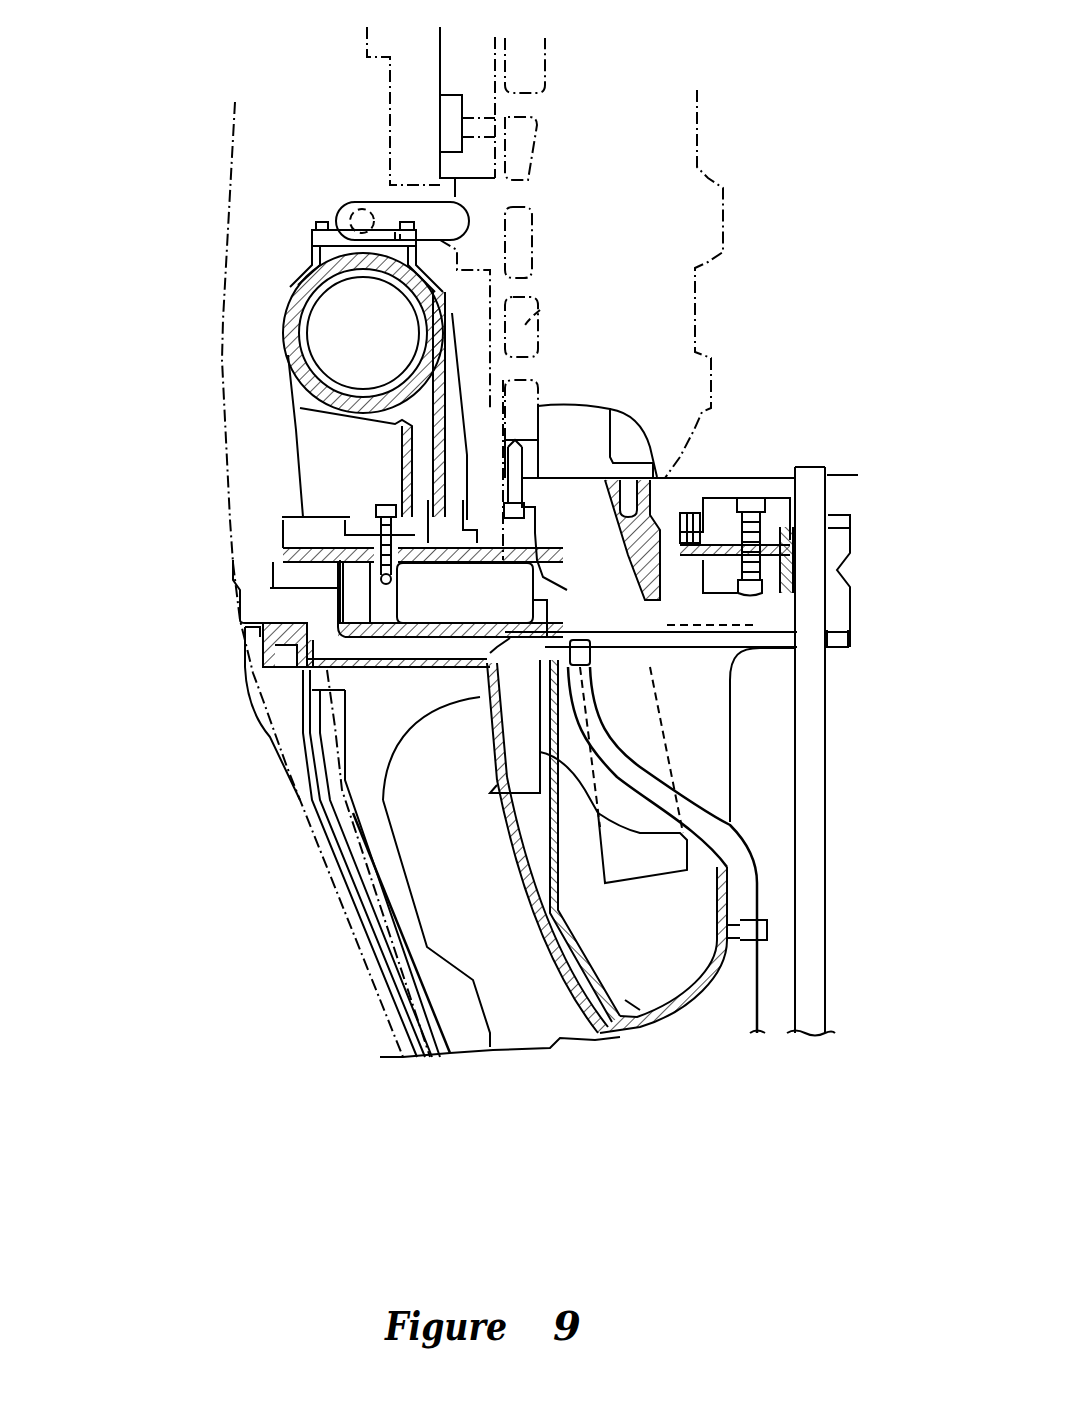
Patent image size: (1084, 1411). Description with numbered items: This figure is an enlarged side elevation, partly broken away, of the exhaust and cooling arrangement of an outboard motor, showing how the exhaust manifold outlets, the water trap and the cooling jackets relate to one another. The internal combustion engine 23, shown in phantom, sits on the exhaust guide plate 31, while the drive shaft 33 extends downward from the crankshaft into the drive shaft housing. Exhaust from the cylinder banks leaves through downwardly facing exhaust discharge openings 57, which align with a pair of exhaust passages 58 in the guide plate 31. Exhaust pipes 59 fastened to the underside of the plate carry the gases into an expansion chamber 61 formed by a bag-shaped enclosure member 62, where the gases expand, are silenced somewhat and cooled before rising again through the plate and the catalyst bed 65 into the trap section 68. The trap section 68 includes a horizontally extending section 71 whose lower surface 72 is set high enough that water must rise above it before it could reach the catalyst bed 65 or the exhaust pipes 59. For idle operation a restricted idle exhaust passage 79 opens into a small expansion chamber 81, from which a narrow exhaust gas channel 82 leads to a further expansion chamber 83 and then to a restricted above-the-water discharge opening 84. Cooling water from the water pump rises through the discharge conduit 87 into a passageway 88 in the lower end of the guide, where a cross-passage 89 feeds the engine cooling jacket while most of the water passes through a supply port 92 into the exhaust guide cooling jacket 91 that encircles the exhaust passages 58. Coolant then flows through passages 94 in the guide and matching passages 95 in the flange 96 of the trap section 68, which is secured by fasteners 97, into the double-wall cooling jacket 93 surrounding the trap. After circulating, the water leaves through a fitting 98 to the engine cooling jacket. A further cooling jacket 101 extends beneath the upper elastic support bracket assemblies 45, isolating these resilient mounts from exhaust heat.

The internal combustion engine 23 is at (817, 333).
The exhaust guide plate 31 is at (266, 546).
The drive shaft 33 is at (817, 807).
The upper elastic support bracket assemblies 45 is at (562, 990).
The exhaust discharge openings 57 is at (573, 457).
The exhaust passages 58 is at (618, 552).
The exhaust pipes 59 is at (632, 872).
The expansion chamber 61 is at (630, 993).
The bag-shaped enclosure member 62 is at (678, 1013).
The catalyst bed 65 is at (537, 320).
The trap section 68 is at (303, 268).
The horizontally extending section 71 is at (347, 317).
The lower surface 72 is at (368, 395).
The restricted idle exhaust passage 79 is at (487, 793).
The small expansion chamber 81 is at (517, 720).
The exhaust gas channel 82 is at (393, 647).
The further expansion chamber 83 is at (335, 585).
The above-the-water exhaust gas discharge opening 84 is at (237, 602).
The discharge conduit 87 is at (745, 963).
The passageway 88 is at (607, 643).
The cross-passage 89 is at (615, 640).
The exhaust guide cooling jacket 91 is at (303, 650).
The supply port 92 is at (497, 668).
The cooling jacket 93 is at (360, 423).
The passages 94 is at (418, 567).
The matching passages 95 is at (465, 440).
The flange 96 is at (333, 513).
The fasteners 97 is at (360, 488).
The fitting 98 is at (393, 200).
The further cooling jacket 101 is at (735, 608).